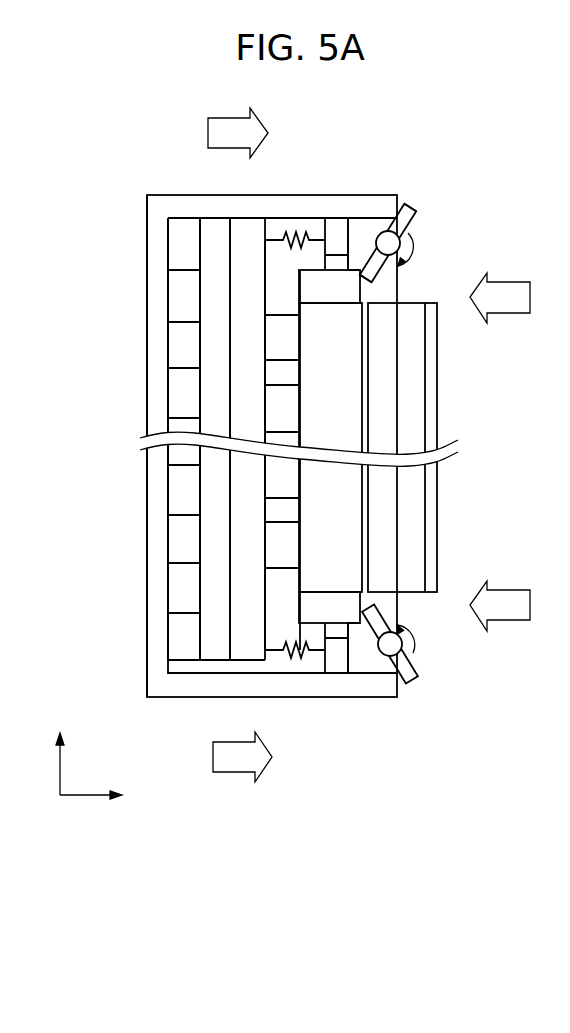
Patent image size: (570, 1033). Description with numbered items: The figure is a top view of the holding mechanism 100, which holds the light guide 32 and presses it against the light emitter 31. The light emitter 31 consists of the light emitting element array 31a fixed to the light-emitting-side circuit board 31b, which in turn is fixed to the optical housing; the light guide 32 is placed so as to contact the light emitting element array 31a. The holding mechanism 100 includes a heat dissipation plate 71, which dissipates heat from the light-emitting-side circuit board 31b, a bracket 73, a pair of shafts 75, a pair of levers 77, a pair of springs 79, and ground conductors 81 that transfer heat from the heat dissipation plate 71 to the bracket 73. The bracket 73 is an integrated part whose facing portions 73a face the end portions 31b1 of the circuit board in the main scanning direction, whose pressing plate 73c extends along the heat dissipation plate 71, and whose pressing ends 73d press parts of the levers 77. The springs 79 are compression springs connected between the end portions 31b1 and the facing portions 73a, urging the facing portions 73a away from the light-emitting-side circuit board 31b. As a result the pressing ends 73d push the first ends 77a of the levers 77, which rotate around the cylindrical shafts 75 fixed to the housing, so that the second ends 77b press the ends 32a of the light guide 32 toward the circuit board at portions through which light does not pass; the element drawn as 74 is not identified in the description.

The holding mechanism 100 is at (487, 168).
The light emitter 31 is at (264, 446).
The light emitting element array 31a is at (273, 655).
The light-emitting-side circuit board 31b is at (258, 665).
The end portions of the light-emitting-side circuit board 31b1 is at (250, 232).
The light guide 32 is at (443, 517).
The ends of the light guide 32a is at (325, 225).
The heat dissipation plate 71 is at (215, 227).
The bracket 73 is at (363, 185).
The facing portions 73a is at (337, 245).
The pressing plate 73c is at (160, 340).
The pressing ends 73d is at (390, 215).
The bottom wall 74 is at (395, 620).
The shafts 75 is at (400, 232).
The levers 77 is at (425, 240).
The first ends of the levers 77a is at (406, 210).
The second ends of the levers 77b is at (372, 280).
The springs 79 is at (282, 235).
The ground conductors 81 is at (178, 247).